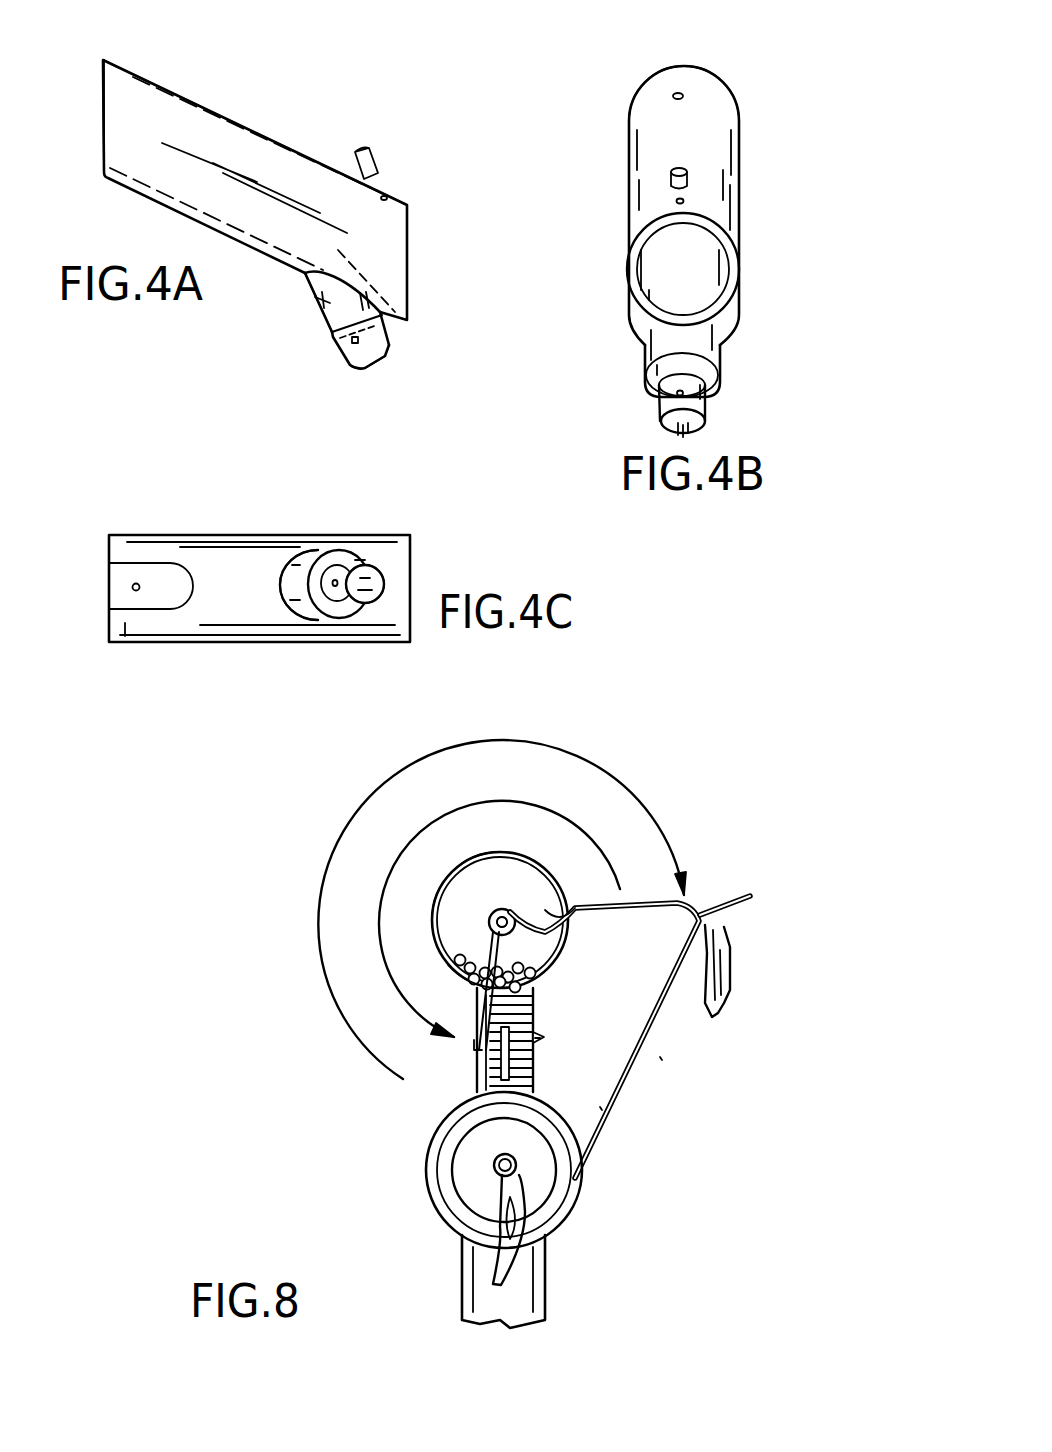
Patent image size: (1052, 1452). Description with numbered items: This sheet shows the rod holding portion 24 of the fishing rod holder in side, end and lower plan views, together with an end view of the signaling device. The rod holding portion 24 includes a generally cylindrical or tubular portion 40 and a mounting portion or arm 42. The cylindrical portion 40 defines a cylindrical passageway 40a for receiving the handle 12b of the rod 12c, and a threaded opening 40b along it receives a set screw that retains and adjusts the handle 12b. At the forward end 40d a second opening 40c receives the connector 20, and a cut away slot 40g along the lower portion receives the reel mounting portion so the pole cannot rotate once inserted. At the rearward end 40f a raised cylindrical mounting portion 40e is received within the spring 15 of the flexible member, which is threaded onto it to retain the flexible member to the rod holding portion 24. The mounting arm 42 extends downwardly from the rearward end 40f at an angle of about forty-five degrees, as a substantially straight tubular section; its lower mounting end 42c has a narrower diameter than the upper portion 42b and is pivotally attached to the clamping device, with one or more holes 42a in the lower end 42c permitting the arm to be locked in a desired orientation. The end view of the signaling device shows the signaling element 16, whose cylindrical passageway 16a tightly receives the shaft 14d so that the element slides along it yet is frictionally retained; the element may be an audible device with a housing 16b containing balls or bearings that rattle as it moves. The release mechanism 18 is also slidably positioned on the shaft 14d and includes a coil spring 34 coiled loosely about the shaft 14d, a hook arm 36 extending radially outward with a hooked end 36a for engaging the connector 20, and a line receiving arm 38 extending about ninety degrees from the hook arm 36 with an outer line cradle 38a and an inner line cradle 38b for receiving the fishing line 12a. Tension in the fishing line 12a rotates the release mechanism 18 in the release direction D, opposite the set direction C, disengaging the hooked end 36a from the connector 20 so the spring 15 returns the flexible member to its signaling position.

In FIG. 4A, the rod holding portion 24 is at (270, 67).
In FIG. 4C, the rod holding portion 24 is at (160, 503).
In FIG. 4A, the cylindrical portion 40 is at (281, 157).
In FIG. 4B, the cylindrical portion 40 is at (632, 126).
In FIG. 4C, the cylindrical portion 40 is at (258, 520).
In FIG. 8, the cylindrical portion 40 is at (437, 1184).
In FIG. 4A, the cylindrical passageway 40a is at (100, 141).
In FIG. 4B, the cylindrical passageway 40a is at (703, 269).
In FIG. 8, the cylindrical passageway 40a is at (460, 1204).
In FIG. 4A, the threaded opening 40b is at (384, 206).
In FIG. 4B, the threaded opening 40b is at (668, 200).
In FIG. 4A, the second opening 40c is at (129, 65).
In FIG. 4B, the second opening 40c is at (680, 92).
In FIG. 4C, the second opening 40c is at (133, 587).
In FIG. 4A, the forward end 40d is at (122, 56).
In FIG. 4B, the forward end 40d is at (660, 90).
In FIG. 4C, the forward end 40d is at (125, 640).
In FIG. 4A, the mounting portion 40e is at (381, 155).
In FIG. 4B, the mounting portion 40e is at (692, 174).
In FIG. 4A, the rearward end 40f is at (389, 186).
In FIG. 4B, the rearward end 40f is at (700, 209).
In FIG. 4C, the rearward end 40f is at (372, 545).
In FIG. 4C, the cut away slot 40g is at (163, 597).
In FIG. 4A, the mounting arm 42 is at (405, 337).
In FIG. 4B, the mounting arm 42 is at (617, 361).
In FIG. 4C, the mounting arm 42 is at (318, 520).
In FIG. 8, the mounting arm 42 is at (520, 1279).
In FIG. 4A, the holes 42a is at (363, 365).
In FIG. 4B, the holes 42a is at (676, 395).
In FIG. 4C, the holes 42a is at (330, 590).
In FIG. 4A, the upper portion 42b is at (313, 315).
In FIG. 4B, the upper portion 42b is at (700, 343).
In FIG. 4C, the upper portion 42b is at (282, 585).
In FIG. 4A, the lower mounting end 42c is at (390, 350).
In FIG. 4B, the lower mounting end 42c is at (715, 399).
In FIG. 4C, the lower mounting end 42c is at (370, 575).
In FIG. 8, the fishing line 12a is at (660, 1057).
In FIG. 8, the handle 12b is at (486, 1202).
In FIG. 8, the rod 12c is at (503, 1154).
In FIG. 8, the shaft 14d is at (563, 945).
In FIG. 8, the spring 15 is at (540, 1038).
In FIG. 8, the signaling element 16 is at (412, 921).
In FIG. 8, the cylindrical passageway 16a is at (440, 898).
In FIG. 8, the housing 16b is at (448, 965).
In FIG. 8, the release mechanism 18 is at (501, 882).
In FIG. 8, the connector 20 is at (600, 1107).
In FIG. 8, the coil spring 34 is at (488, 915).
In FIG. 8, the hook arm 36 is at (468, 983).
In FIG. 8, the hooked end 36a is at (535, 1072).
In FIG. 8, the line receiving arm 38 is at (647, 875).
In FIG. 8, the outer line cradle 38a is at (540, 1003).
In FIG. 8, the inner line cradle 38b is at (552, 897).
In FIG. 8, the set direction C is at (415, 835).
In FIG. 8, the release direction D is at (590, 757).